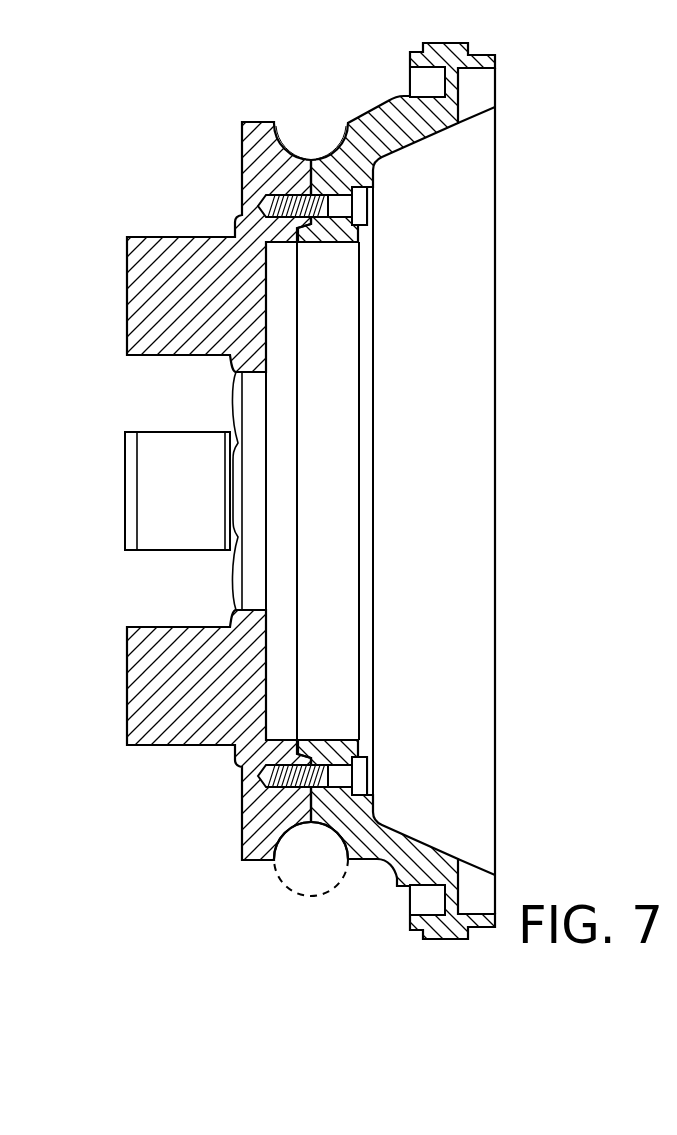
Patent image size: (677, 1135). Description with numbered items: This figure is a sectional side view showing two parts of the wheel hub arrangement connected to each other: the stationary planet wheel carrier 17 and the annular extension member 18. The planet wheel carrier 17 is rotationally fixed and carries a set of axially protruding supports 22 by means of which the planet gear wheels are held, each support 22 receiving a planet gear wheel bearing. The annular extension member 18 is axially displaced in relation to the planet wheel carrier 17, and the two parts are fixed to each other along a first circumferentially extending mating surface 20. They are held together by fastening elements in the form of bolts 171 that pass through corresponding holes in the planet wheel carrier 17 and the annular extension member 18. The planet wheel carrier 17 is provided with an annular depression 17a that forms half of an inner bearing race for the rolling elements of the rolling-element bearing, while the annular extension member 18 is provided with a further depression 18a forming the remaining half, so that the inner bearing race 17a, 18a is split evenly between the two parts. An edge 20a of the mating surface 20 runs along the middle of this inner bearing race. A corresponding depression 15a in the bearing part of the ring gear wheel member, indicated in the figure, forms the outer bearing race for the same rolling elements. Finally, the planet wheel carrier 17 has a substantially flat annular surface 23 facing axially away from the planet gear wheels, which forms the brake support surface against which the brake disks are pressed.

The depression 15a is at (310, 897).
The planet wheel carrier 17 is at (262, 810).
The annular depression 17a is at (285, 140).
The annular extension member 18 is at (407, 853).
The further depression 18a is at (336, 137).
The mating surface 20 is at (312, 165).
The edge of the mating surface 20a is at (310, 160).
The axially protruding support 22 is at (185, 293).
The flat annular surface 23 is at (266, 320).
The fastening element/bolt 171 is at (368, 207).